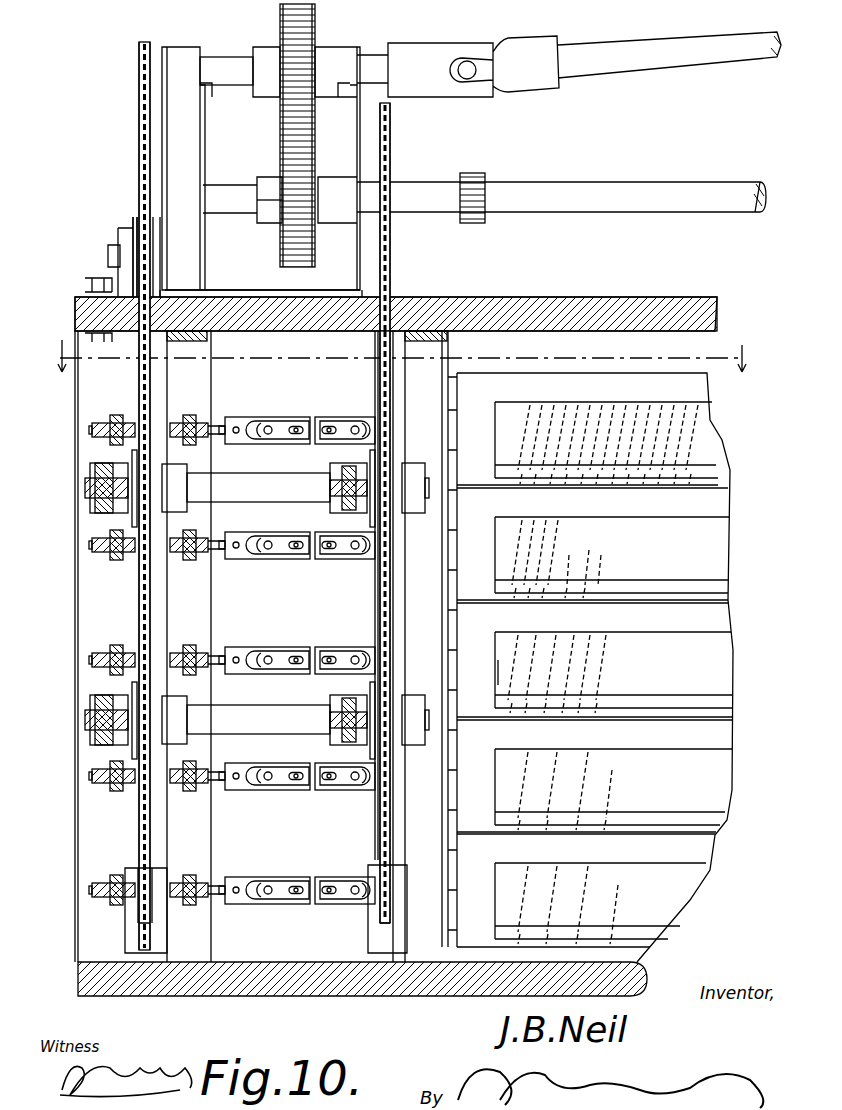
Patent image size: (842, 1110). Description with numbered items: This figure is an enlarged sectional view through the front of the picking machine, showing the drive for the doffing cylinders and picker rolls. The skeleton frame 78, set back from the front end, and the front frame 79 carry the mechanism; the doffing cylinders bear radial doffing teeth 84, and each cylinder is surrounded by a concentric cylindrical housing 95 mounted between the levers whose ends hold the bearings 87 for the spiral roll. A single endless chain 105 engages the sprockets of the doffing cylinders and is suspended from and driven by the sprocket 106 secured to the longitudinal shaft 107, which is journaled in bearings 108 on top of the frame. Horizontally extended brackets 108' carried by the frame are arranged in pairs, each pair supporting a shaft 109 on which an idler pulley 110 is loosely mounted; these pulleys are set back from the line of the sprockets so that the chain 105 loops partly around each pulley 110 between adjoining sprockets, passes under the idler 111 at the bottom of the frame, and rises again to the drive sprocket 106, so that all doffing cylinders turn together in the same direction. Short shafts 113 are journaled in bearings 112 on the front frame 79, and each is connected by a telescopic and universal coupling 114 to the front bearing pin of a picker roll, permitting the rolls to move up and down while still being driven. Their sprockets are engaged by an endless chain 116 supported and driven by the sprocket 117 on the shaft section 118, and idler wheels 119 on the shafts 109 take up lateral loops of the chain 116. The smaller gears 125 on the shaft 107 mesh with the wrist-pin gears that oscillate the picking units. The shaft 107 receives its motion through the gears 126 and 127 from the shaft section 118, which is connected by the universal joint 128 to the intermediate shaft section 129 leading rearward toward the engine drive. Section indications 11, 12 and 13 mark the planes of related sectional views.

The section line 11 is at (379, 1018).
The section line 12 is at (212, 1018).
The section line 13 is at (788, 367).
The skeleton frame 78 is at (416, 646).
The front frame 79 is at (202, 852).
The doffing teeth 84 is at (597, 582).
The bearings 87 is at (492, 676).
The cylindrical housing 95 is at (603, 674).
The endless chain 105 is at (380, 594).
The sprocket 106 is at (392, 162).
The longitudinal shaft 107 is at (436, 212).
The bearings 108 is at (261, 172).
The brackets 108' is at (206, 604).
The shaft 109 is at (282, 482).
The idler pulley 110 is at (402, 520).
The idler 111 is at (378, 925).
The bearings 112 is at (115, 568).
The short shafts 113 is at (224, 428).
The telescopic and universal coupling 114 is at (280, 420).
The endless chain 116 is at (138, 160).
The sprocket 117 is at (138, 60).
The shaft section 118 is at (208, 62).
The idler wheels 119 is at (178, 487).
The smaller gears 125 is at (485, 176).
The gear 126 is at (281, 258).
The gear 127 is at (315, 21).
The universal joint 128 is at (500, 92).
The intermediate shaft section 129 is at (640, 60).